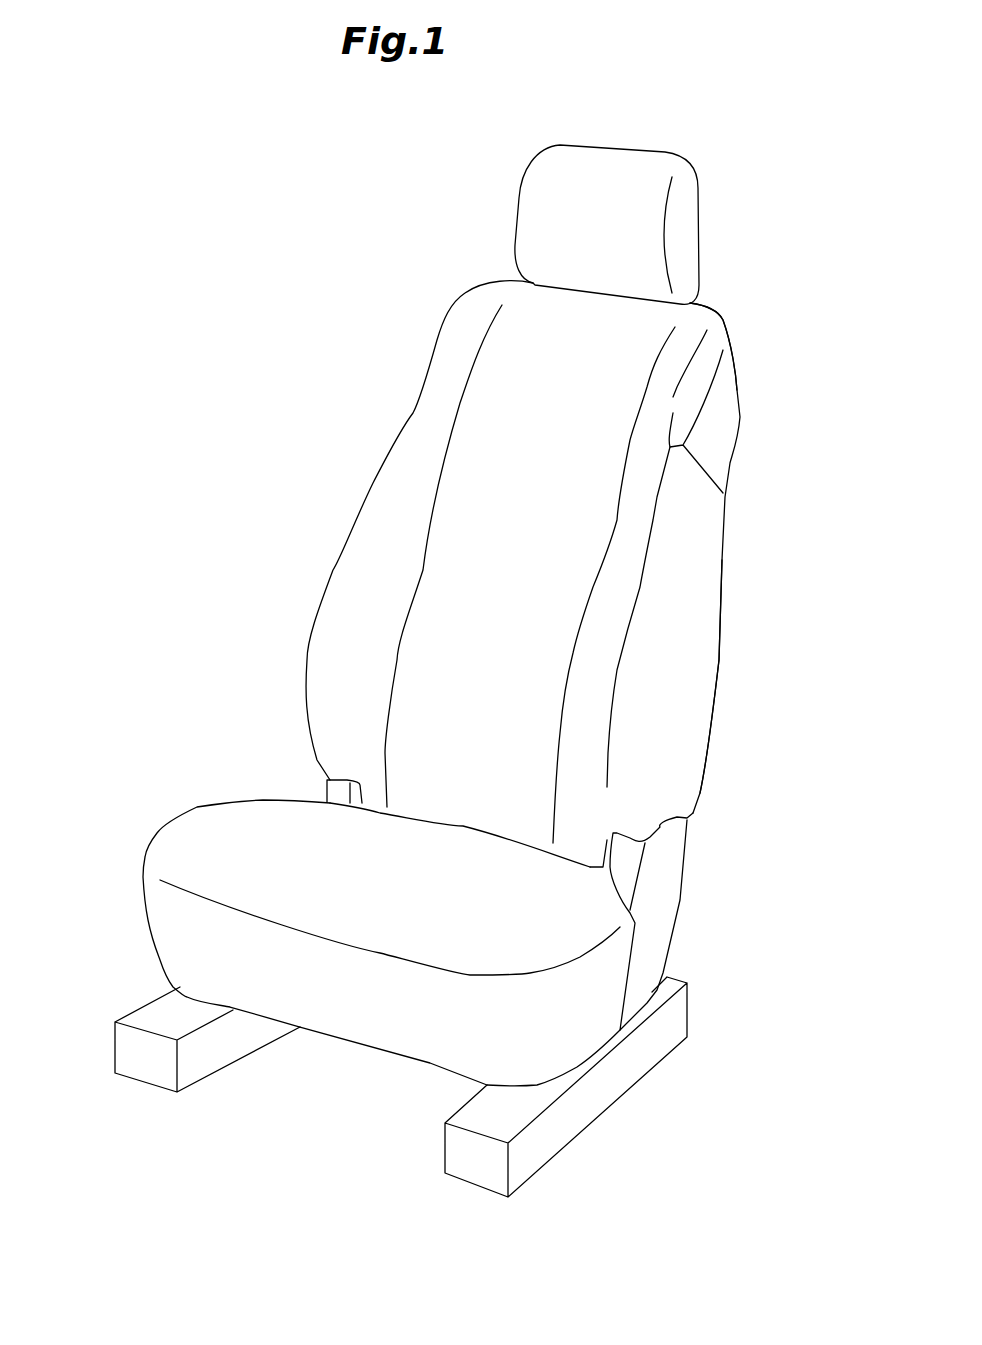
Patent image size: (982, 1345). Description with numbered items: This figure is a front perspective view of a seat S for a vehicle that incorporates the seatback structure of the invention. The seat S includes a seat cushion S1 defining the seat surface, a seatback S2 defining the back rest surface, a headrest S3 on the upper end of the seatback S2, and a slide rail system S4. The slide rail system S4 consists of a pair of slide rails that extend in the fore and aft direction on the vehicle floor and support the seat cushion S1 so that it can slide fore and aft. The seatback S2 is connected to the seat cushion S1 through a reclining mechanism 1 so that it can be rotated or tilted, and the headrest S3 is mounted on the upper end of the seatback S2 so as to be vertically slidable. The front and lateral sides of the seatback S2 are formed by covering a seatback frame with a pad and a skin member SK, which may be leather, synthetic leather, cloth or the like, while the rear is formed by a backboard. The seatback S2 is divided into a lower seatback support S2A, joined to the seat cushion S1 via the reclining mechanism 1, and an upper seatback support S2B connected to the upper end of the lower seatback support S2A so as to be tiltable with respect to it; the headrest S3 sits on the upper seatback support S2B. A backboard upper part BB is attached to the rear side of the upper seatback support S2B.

The seat S is at (318, 295).
The seat cushion S1 is at (210, 797).
The seatback S2 is at (362, 487).
The lower seatback support S2A is at (720, 663).
The upper seatback support S2B is at (737, 380).
The headrest S3 is at (520, 210).
The slide rail system S4 is at (143, 1000).
The skin member SK is at (434, 578).
The backboard upper part BB is at (727, 427).
The reclining mechanism 1 is at (327, 798).